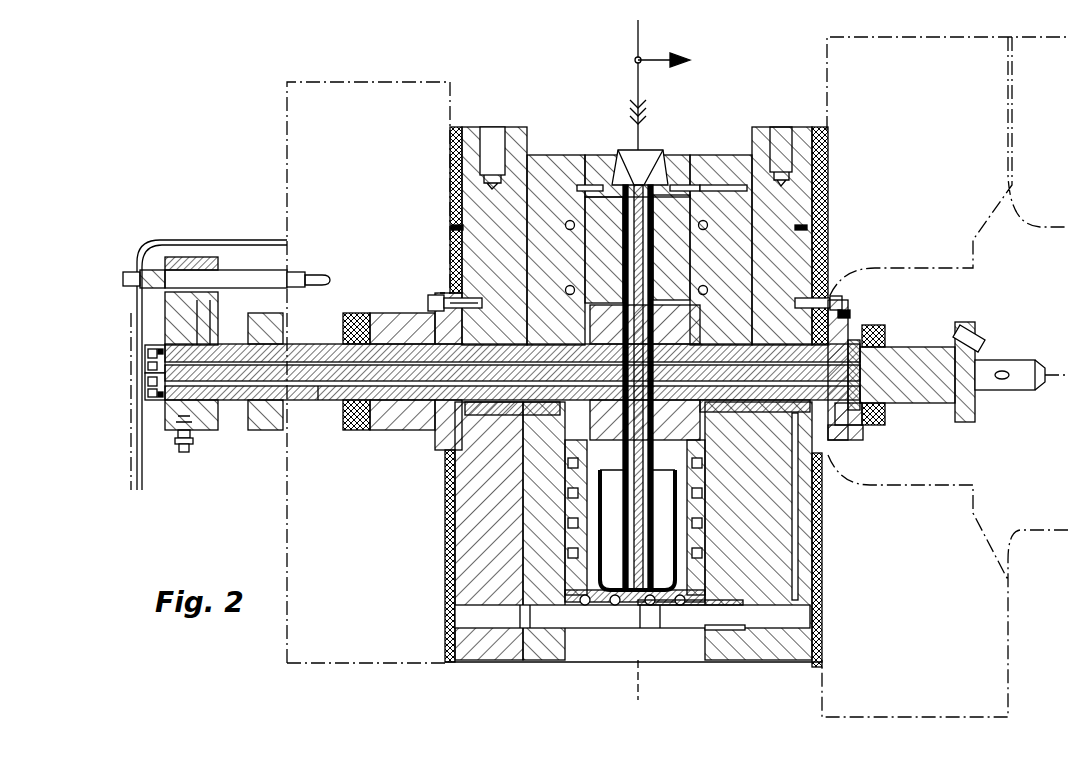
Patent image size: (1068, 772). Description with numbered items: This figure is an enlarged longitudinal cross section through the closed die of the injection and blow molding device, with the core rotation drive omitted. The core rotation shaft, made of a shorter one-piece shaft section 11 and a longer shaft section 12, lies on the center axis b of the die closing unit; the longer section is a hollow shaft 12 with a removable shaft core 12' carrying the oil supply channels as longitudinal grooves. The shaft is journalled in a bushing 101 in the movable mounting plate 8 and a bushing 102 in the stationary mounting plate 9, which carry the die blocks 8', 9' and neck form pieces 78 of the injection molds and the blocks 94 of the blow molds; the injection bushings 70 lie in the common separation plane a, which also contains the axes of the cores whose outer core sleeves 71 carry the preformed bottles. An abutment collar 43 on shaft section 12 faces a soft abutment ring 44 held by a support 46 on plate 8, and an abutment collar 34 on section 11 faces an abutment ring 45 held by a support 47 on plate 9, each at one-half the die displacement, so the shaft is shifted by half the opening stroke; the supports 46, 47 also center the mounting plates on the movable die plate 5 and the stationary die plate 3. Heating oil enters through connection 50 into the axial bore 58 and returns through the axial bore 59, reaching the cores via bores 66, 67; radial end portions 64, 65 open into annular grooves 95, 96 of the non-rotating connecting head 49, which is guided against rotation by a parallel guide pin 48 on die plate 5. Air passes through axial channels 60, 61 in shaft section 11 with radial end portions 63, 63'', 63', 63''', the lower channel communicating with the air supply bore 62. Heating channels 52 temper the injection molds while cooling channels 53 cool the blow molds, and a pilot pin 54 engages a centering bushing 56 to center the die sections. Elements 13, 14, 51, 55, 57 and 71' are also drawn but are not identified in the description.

The stationary die plate 3 is at (848, 672).
The movable die plate 5 is at (312, 160).
The movable mounting plate 8 is at (465, 236).
The die block 8' is at (604, 195).
The stationary mounting plate 9 is at (805, 236).
The die block 9' is at (736, 216).
The shaft section 11 is at (950, 345).
The shaft section 12 is at (512, 351).
The removable shaft core 12' is at (512, 429).
The cover plate 13 is at (668, 193).
The bore 14 is at (610, 603).
The abutment collar 34 is at (975, 350).
The abutment collar 43 is at (264, 432).
The abutment ring 44 is at (356, 432).
The abutment ring 45 is at (873, 326).
The support 46 is at (423, 420).
The support 47 is at (838, 443).
The parallel guide pin 48 is at (243, 280).
The non-rotating connecting head 49 is at (210, 415).
The entry connection 50 is at (172, 445).
The pipe 51 is at (165, 238).
The heating channels 52 is at (569, 200).
The cooling channels 53 is at (690, 600).
The pilot pin 54 is at (580, 620).
The slot 55 is at (725, 628).
The centering bushing 56 is at (690, 607).
The screw 57 is at (492, 140).
The axial bore 58 is at (318, 402).
The axial bore 59 is at (386, 432).
The air supply channel 60 is at (822, 300).
The air supply channel 61 is at (845, 312).
The air supply bore 62 is at (795, 540).
The radial end portion 63 is at (907, 406).
The radial end portion 63' is at (899, 346).
The radial end portion 63'' is at (850, 413).
The radial end portion 63''' is at (838, 209).
The radial end portion 64 is at (148, 398).
The radial end portion 65 is at (150, 364).
The bore 66 is at (452, 500).
The bore 67 is at (470, 303).
The injection bushing 70 is at (645, 162).
The outer core sleeve 71 is at (590, 342).
The pin 71' is at (519, 387).
The form piece 78 is at (541, 232).
The die block 94 is at (462, 612).
The annular groove 95 is at (195, 312).
The annular groove 96 is at (190, 345).
The bushing 101 is at (440, 300).
The bushing 102 is at (860, 418).
The separation plane a is at (660, 371).
The center axis b is at (78, 370).